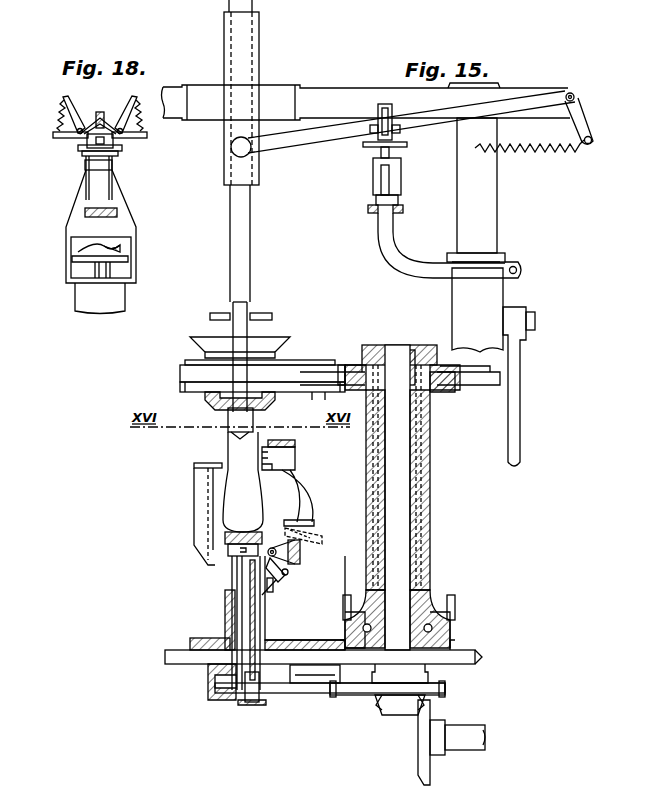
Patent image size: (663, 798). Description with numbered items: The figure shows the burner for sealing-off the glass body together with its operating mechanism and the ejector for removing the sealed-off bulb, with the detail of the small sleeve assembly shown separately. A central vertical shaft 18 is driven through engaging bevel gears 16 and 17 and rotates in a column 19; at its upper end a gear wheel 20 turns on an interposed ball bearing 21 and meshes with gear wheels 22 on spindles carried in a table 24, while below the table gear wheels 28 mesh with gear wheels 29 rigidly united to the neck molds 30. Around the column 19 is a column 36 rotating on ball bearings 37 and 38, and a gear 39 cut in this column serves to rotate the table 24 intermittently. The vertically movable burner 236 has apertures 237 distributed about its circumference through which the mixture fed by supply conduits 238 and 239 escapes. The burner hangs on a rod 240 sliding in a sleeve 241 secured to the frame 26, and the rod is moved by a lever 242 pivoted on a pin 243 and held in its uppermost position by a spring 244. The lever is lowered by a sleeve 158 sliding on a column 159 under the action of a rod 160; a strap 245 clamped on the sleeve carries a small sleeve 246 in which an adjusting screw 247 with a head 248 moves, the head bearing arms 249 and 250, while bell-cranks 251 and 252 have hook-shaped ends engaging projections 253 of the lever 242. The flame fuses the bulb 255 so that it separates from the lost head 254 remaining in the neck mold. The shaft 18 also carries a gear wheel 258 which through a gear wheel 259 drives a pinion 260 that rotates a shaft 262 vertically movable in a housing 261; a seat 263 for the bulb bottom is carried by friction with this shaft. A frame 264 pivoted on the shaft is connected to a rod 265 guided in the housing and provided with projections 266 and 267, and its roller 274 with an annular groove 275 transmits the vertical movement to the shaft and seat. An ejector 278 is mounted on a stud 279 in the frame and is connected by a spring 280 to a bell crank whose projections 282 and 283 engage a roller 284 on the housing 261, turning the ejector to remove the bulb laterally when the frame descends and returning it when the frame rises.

In FIG. 15, the bevel gear 16 is at (440, 752).
In FIG. 15, the bevel gear 17 is at (380, 700).
In FIG. 15, the central vertical shaft 18 is at (398, 437).
In FIG. 15, the column 19 is at (430, 487).
In FIG. 15, the gear wheel 20 is at (352, 368).
In FIG. 15, the ball bearing 21 is at (411, 350).
In FIG. 15, the gear wheels 22 is at (341, 365).
In FIG. 15, the table 24 is at (484, 378).
In FIG. 15, the frame 26 is at (333, 95).
In FIG. 15, the gear wheels 28 is at (324, 400).
In FIG. 15, the gear wheels 29 is at (187, 388).
In FIG. 15, the neck mold 30 is at (280, 345).
In FIG. 15, the column 36 is at (430, 463).
In FIG. 15, the ball bearing 37 is at (436, 392).
In FIG. 15, the ball bearing 38 is at (452, 627).
In FIG. 15, the gear 39 is at (455, 600).
In FIG. 15, the sleeve 158 is at (493, 297).
In FIG. 15, the column 159 is at (483, 212).
In FIG. 15, the rod 160 is at (515, 414).
In FIG. 15, the burner 236 is at (243, 333).
In FIG. 15, the apertures 237 is at (236, 435).
In FIG. 15, the supply conduit 238 is at (210, 318).
In FIG. 15, the supply conduit 239 is at (272, 318).
In FIG. 15, the rod 240 is at (240, 210).
In FIG. 15, the sleeve 241 is at (230, 150).
In FIG. 15, the lever 242 is at (316, 146).
In FIG. 15, the pin 243 is at (575, 97).
In FIG. 15, the spring 244 is at (548, 150).
In FIG. 15, the strap 245 is at (492, 272).
In FIG. 18, the small sleeve 246 is at (105, 188).
In FIG. 15, the small sleeve 246 is at (392, 178).
In FIG. 18, the adjusting screw 247 is at (85, 213).
In FIG. 18, the head 248 is at (88, 152).
In FIG. 18, the arm 249 is at (72, 121).
In FIG. 18, the arm 250 is at (130, 108).
In FIG. 18, the bell-crank 251 is at (70, 138).
In FIG. 18, the bell-crank 252 is at (130, 138).
In FIG. 18, the projections 253 is at (98, 117).
In FIG. 15, the lost head 254 is at (228, 415).
In FIG. 15, the bulb 255 is at (232, 487).
In FIG. 15, the gear wheel 258 is at (445, 688).
In FIG. 15, the gear wheel 259 is at (330, 690).
In FIG. 15, the pinion 260 is at (252, 690).
In FIG. 15, the housing 261 is at (210, 640).
In FIG. 15, the shaft 262 is at (212, 682).
In FIG. 15, the seat 263 is at (314, 523).
In FIG. 15, the frame 264 is at (200, 512).
In FIG. 15, the rod 265 is at (258, 629).
In FIG. 15, the projection 266 is at (275, 585).
In FIG. 15, the projection 267 is at (268, 600).
In FIG. 15, the roller 274 is at (225, 538).
In FIG. 15, the annular groove 275 is at (228, 552).
In FIG. 15, the ejector 278 is at (308, 502).
In FIG. 15, the stud 279 is at (300, 560).
In FIG. 15, the spring 280 is at (322, 540).
In FIG. 15, the projection 282 is at (285, 572).
In FIG. 15, the projection 283 is at (248, 570).
In FIG. 15, the roller 284 is at (290, 574).